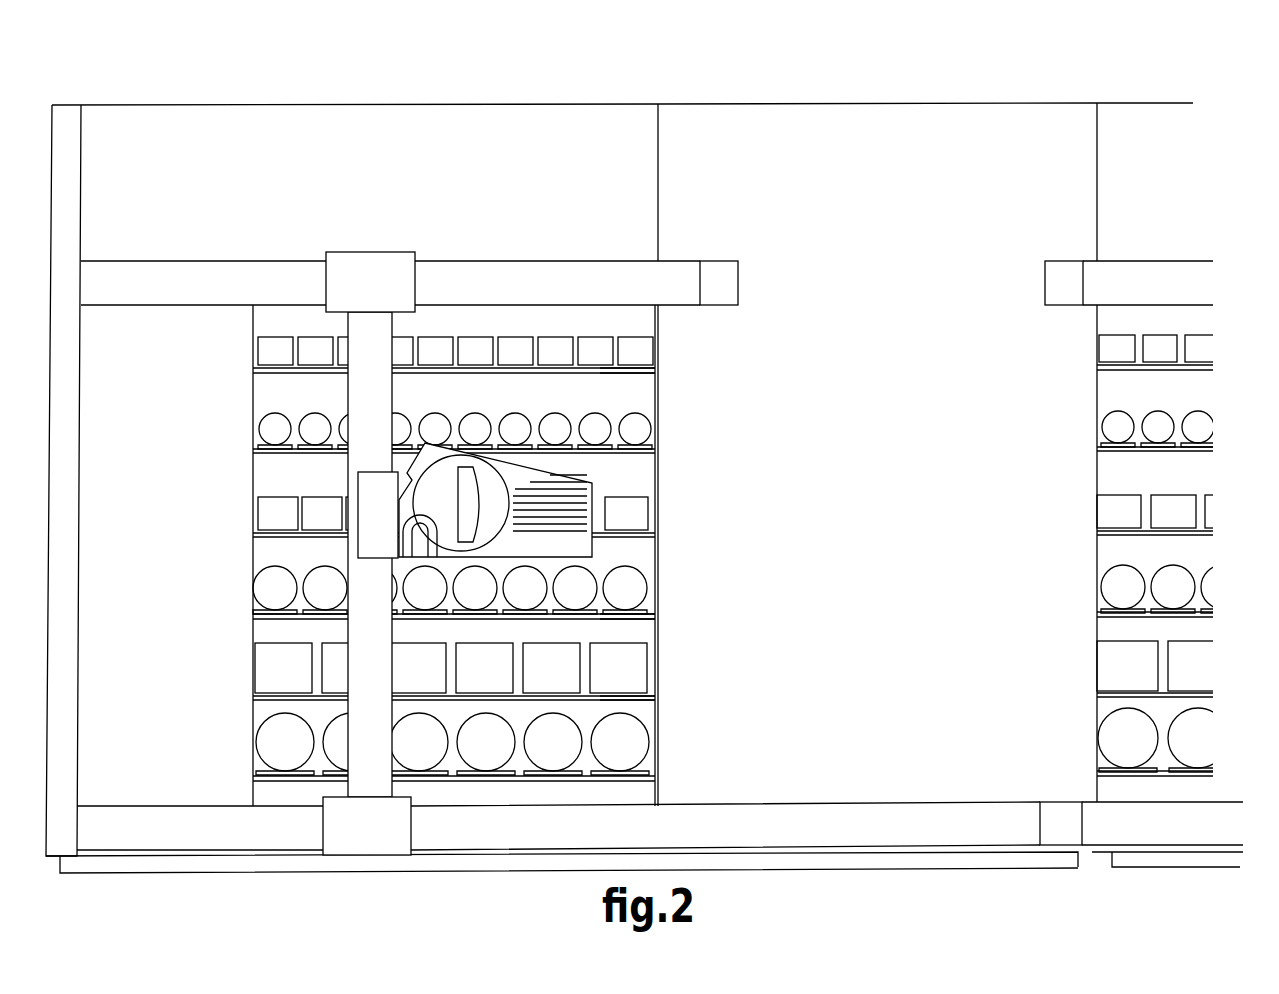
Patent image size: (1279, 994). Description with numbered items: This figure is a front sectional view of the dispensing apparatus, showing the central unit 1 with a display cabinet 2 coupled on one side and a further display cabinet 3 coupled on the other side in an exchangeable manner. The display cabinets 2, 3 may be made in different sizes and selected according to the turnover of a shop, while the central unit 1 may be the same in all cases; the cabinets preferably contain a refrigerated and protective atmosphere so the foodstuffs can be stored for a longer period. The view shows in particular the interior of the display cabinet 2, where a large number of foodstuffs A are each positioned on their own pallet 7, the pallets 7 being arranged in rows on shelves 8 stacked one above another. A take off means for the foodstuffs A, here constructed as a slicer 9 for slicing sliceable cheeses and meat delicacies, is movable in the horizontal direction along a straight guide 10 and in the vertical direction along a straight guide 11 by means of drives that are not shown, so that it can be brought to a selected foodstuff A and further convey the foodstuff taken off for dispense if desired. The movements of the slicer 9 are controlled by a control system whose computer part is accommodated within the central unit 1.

The central unit 1 is at (885, 128).
The display cabinet 2 is at (386, 130).
The display cabinet 3 is at (1146, 138).
The pallet 7 is at (423, 560).
The shelf 8 is at (633, 371).
The slicer 9 is at (560, 497).
The straight guide 10 is at (318, 278).
The straight guide 11 is at (360, 633).
The foodstuff A is at (270, 352).